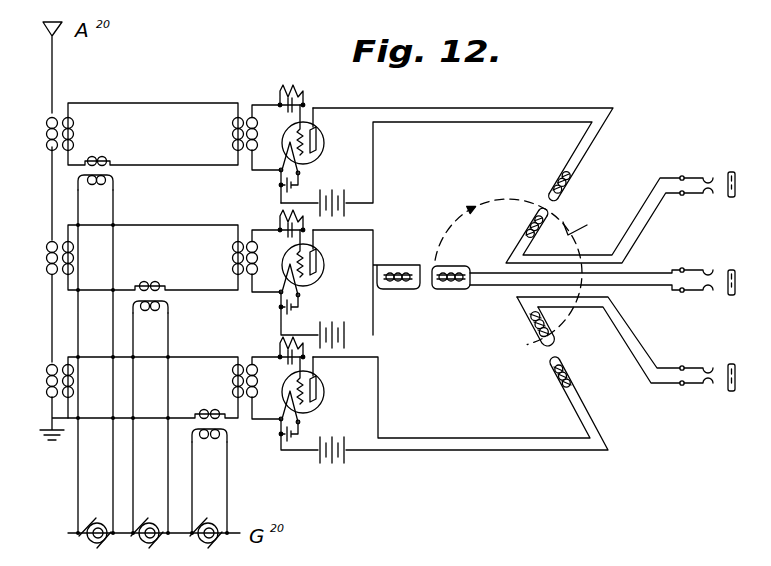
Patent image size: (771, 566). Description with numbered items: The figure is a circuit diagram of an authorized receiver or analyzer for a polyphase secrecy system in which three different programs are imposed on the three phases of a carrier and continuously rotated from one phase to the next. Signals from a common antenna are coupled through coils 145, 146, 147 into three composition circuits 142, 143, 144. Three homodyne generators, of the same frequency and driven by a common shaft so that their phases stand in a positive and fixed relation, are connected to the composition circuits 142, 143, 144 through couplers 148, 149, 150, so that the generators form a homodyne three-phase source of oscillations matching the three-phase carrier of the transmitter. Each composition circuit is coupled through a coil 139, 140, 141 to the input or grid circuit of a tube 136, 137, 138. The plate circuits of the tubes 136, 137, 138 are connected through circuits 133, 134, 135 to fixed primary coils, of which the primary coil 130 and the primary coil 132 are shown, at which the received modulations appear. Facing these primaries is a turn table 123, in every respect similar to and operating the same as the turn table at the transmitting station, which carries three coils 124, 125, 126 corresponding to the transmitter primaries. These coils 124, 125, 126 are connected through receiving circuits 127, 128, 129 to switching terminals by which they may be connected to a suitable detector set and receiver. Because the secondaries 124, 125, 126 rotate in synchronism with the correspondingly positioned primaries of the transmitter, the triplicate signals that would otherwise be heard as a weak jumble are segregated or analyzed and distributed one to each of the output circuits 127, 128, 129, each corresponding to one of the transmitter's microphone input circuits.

The turn table 123 is at (578, 202).
The coil 124 is at (528, 228).
The coil 125 is at (470, 282).
The coil 126 is at (530, 346).
The receiving circuit 127 is at (645, 192).
The receiving circuit 128 is at (665, 263).
The receiving circuit 129 is at (645, 360).
The primary coil 130 is at (556, 177).
The primary coil 132 is at (557, 382).
The circuit 133 is at (508, 100).
The circuit 134 is at (361, 237).
The circuit 135 is at (440, 430).
The tube 136 is at (318, 160).
The tube 137 is at (331, 286).
The tube 138 is at (338, 400).
The coil 139 is at (246, 96).
The coil 140 is at (240, 228).
The coil 141 is at (239, 360).
The composition circuit 142 is at (200, 103).
The composition circuit 143 is at (177, 219).
The composition circuit 144 is at (210, 357).
The coil 145 is at (57, 103).
The coil 146 is at (72, 259).
The coil 147 is at (57, 357).
The coupler 148 is at (113, 175).
The coupler 149 is at (169, 303).
The coupler 150 is at (229, 430).